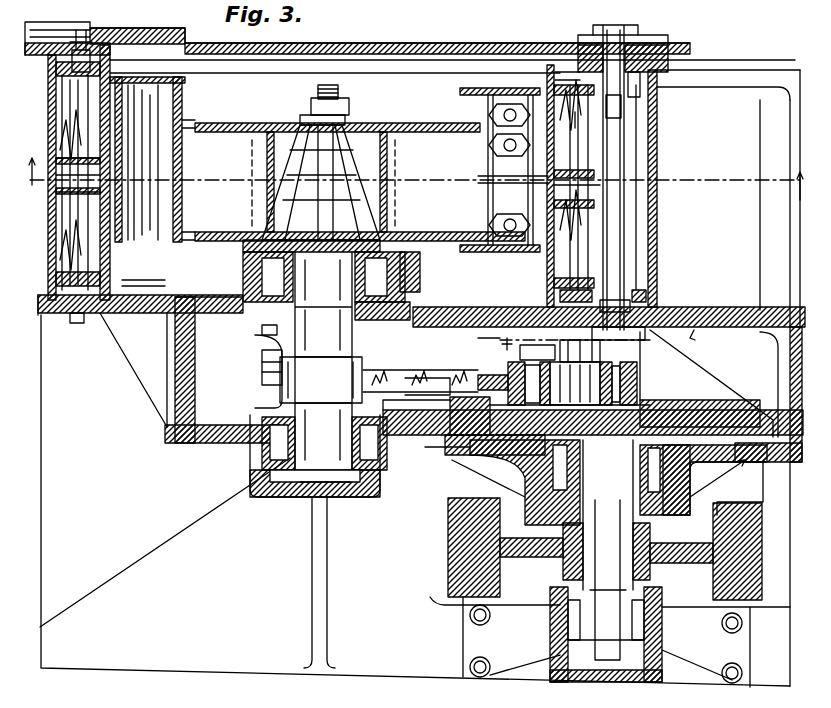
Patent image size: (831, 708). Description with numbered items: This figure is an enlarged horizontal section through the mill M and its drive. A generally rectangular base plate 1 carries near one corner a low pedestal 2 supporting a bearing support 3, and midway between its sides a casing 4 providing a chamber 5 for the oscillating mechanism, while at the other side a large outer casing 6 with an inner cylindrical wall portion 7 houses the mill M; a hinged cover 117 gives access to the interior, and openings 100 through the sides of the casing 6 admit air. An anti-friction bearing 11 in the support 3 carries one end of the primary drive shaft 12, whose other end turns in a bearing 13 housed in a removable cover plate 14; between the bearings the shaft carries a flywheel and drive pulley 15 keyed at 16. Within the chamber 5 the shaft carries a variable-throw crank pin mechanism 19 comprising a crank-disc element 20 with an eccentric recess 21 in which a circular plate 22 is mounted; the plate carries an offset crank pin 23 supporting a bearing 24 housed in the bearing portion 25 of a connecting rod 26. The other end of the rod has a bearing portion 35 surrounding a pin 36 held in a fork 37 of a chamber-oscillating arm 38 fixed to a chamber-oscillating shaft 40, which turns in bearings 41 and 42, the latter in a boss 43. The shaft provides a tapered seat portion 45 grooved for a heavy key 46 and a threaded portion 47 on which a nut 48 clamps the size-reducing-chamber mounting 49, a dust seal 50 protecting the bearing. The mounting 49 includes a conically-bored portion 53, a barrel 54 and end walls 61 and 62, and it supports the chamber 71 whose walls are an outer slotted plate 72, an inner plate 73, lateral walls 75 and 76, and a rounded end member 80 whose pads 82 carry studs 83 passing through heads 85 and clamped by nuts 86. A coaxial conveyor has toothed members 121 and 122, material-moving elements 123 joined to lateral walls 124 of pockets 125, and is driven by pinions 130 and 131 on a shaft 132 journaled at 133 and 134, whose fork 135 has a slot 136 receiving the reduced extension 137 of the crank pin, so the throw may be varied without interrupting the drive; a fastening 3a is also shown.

The base plate 1 is at (165, 655).
The pedestal 2 is at (775, 665).
The bearing support 3 is at (513, 656).
The screw 3a is at (665, 352).
The casing 4 is at (752, 345).
The chamber 5 is at (416, 166).
The outer casing or shell member 6 is at (657, 118).
The inner cylindrical wall portion 7 is at (113, 62).
The anti-friction bearing 11 is at (575, 662).
The primary drive shaft 12 is at (606, 640).
The bearing 13 is at (660, 470).
The removable cover plate 14 is at (715, 480).
The flywheel and drive pulley 15 is at (455, 553).
The key 16 is at (555, 616).
The variable-throw crank pin mechanism 19 is at (713, 394).
The crank-disc element 20 is at (460, 414).
The eccentrically-formed circular recess 21 is at (755, 432).
The circular plate 22 is at (735, 385).
The crank pin 23 is at (580, 392).
The anti-friction bearing 24 is at (632, 392).
The bearing portion 25 is at (495, 378).
The connecting rod 26 is at (438, 372).
The bearing portion 35 is at (265, 365).
The pin 36 is at (265, 330).
The fork 37 is at (268, 380).
The chamber-oscillating arm 38 is at (362, 370).
The chamber-oscillating shaft 40 is at (320, 470).
The bearing 41 is at (262, 450).
The bearing 42 is at (250, 305).
The boss 43 is at (406, 375).
The tapered seat portion 45 is at (352, 130).
The key 46 is at (292, 125).
The threaded portion 47 is at (330, 85).
The nut 48 is at (340, 105).
The size-reducing-chamber mounting 49 is at (380, 140).
The dust seal 50 is at (602, 196).
The conically-bored portion 53 is at (262, 125).
The cylindrically-curved wall portion or barrel 54 is at (383, 132).
The end wall 61 is at (206, 122).
The end wall 62 is at (360, 252).
The size-reducing chamber 71 is at (114, 300).
The outer perforated plate 72 is at (92, 312).
The inner plate 73 is at (182, 200).
The lateral wall 75 is at (150, 282).
The lateral wall 76 is at (168, 78).
The chamber-end-forming member 80 is at (482, 172).
The pads or bosses 82 is at (495, 220).
The studs 83 is at (525, 110).
The heads 85 is at (480, 98).
The nuts 86 is at (500, 110).
The openings 100 is at (330, 597).
The hinged cover 117 is at (158, 32).
The annular toothed member 121 is at (573, 65).
The annular toothed member 122 is at (625, 240).
The material-moving elements 123 is at (80, 45).
The lateral walls 124 is at (590, 186).
The pockets 125 is at (75, 180).
The pinion 130 is at (660, 75).
The pinion 131 is at (630, 292).
The shaft 132 is at (590, 175).
The journal 133 is at (640, 48).
The journal 134 is at (645, 322).
The fork 135 is at (473, 337).
The slot 136 is at (650, 330).
The reduced extension 137 is at (640, 300).
The mill M is at (90, 252).